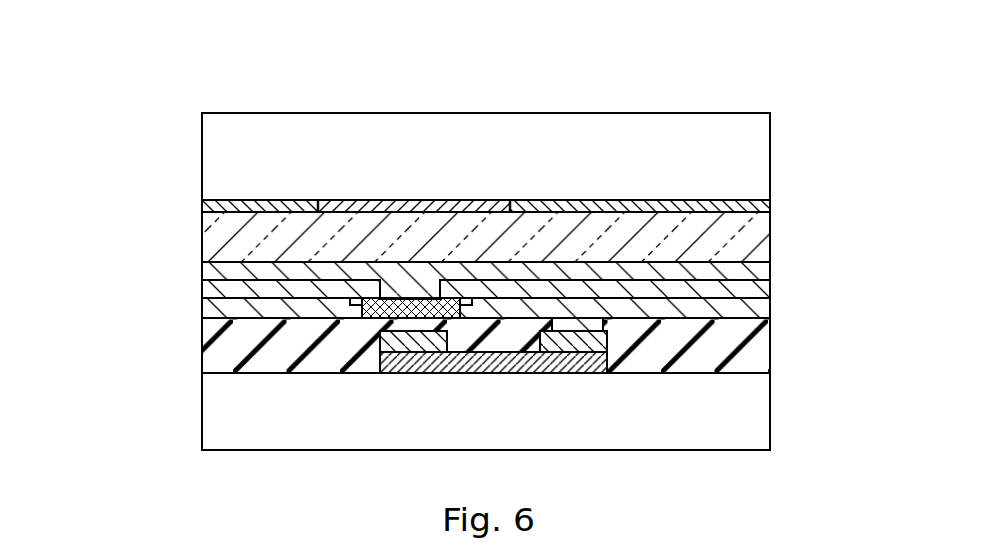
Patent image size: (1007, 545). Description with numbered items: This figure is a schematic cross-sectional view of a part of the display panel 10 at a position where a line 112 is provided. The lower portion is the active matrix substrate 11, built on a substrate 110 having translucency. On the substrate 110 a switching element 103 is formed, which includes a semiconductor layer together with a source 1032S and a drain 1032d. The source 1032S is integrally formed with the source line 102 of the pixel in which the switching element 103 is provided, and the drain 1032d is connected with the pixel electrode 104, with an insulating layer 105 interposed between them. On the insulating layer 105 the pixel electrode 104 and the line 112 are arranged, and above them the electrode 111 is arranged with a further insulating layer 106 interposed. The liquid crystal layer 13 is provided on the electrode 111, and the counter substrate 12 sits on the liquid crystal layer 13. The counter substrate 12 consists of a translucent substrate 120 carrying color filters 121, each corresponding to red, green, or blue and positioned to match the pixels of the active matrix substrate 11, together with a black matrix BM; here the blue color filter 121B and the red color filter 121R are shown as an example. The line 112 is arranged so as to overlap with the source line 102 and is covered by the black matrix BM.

The display panel 10 is at (613, 62).
The counter substrate 12 is at (501, 140).
The substrate 120 is at (758, 157).
The color filters 121 is at (481, 139).
The color filter of blue 121B is at (212, 203).
The color filter of red 121R is at (758, 207).
The black matrix BM is at (412, 199).
The liquid crystal layer 13 is at (758, 235).
The active matrix substrate 11 is at (490, 375).
The electrode 111 is at (758, 275).
The insulating layer 106 is at (758, 296).
The pixel electrode 104 is at (758, 316).
The line 112 is at (378, 296).
The insulating layer 105 is at (758, 355).
The substrate 110 is at (758, 417).
The switching element 103 is at (377, 358).
The source line 102 is at (265, 349).
The source 1032S is at (383, 342).
The drain 1032d is at (608, 345).